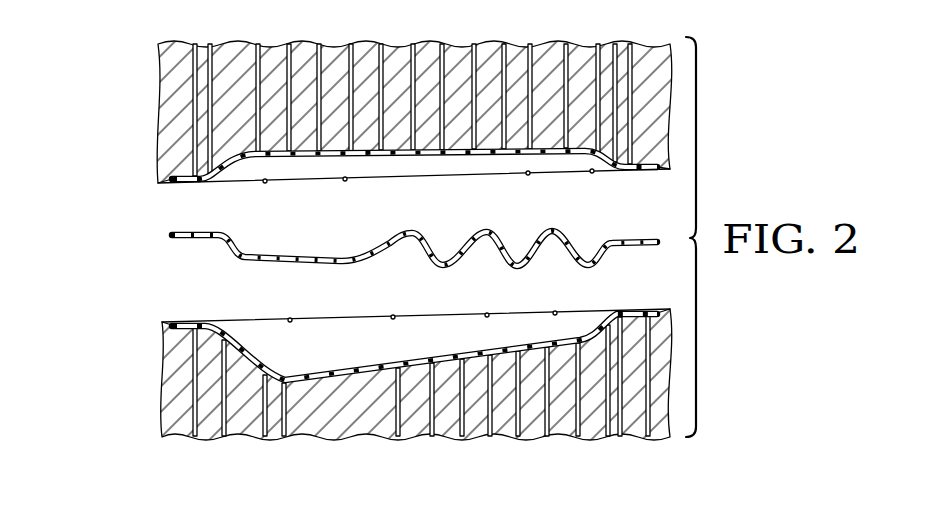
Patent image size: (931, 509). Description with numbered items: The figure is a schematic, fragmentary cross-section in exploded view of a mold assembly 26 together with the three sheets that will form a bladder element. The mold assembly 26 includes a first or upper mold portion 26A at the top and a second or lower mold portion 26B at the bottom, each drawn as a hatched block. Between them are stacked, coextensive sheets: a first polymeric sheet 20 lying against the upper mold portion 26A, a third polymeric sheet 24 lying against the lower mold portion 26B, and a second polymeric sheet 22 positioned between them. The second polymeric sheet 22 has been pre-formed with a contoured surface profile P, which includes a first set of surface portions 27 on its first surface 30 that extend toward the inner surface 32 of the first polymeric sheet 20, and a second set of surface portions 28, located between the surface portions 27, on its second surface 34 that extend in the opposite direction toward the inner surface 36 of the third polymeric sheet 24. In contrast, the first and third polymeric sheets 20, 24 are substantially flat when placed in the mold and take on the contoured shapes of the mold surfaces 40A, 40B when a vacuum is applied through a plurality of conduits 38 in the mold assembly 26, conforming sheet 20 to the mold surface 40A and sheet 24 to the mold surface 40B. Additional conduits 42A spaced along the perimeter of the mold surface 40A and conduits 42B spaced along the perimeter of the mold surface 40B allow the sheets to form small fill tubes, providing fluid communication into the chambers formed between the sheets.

The first polymeric sheet 20 is at (215, 173).
The second polymeric sheet 22 is at (213, 245).
The third polymeric sheet 24 is at (213, 323).
The mold assembly 26 is at (90, 144).
The first or upper mold portion 26A is at (181, 81).
The second or lower mold portion 26B is at (177, 362).
The first set of surface portions 27 is at (410, 236).
The second set of surface portions 28 is at (443, 267).
The first surface 30 is at (387, 230).
The inner surface 32 is at (367, 167).
The second surface 34 is at (340, 273).
The inner surface 36 is at (381, 353).
The conduits 38 is at (290, 52).
The mold surface 40A is at (307, 163).
The mold surface 40B is at (298, 366).
The conduits 42A is at (592, 170).
The conduits 42B is at (290, 320).
The contoured surface profile P is at (567, 238).